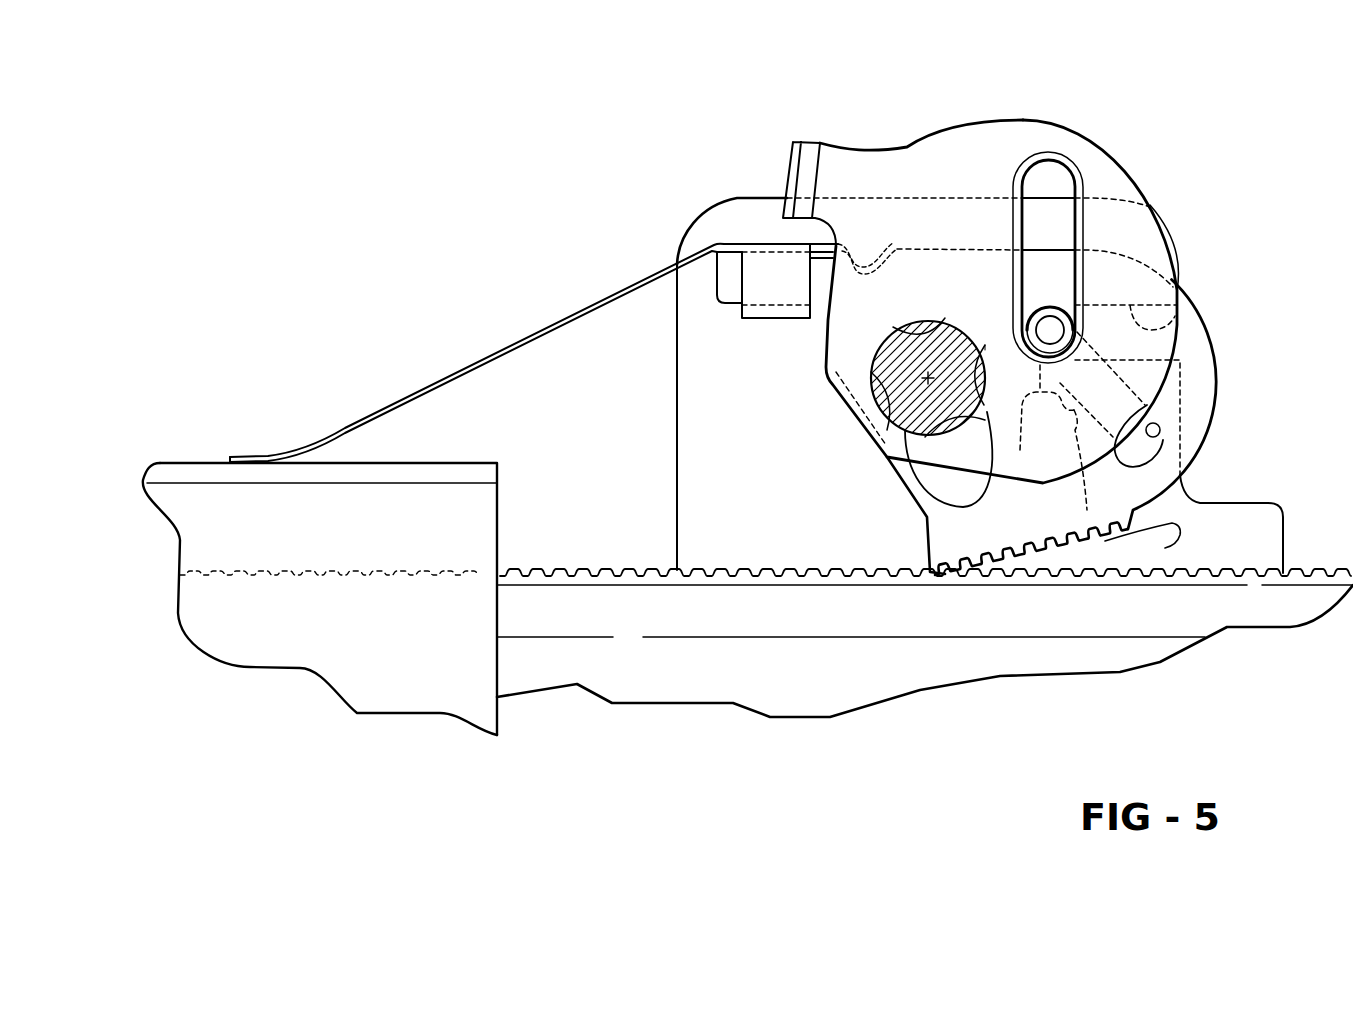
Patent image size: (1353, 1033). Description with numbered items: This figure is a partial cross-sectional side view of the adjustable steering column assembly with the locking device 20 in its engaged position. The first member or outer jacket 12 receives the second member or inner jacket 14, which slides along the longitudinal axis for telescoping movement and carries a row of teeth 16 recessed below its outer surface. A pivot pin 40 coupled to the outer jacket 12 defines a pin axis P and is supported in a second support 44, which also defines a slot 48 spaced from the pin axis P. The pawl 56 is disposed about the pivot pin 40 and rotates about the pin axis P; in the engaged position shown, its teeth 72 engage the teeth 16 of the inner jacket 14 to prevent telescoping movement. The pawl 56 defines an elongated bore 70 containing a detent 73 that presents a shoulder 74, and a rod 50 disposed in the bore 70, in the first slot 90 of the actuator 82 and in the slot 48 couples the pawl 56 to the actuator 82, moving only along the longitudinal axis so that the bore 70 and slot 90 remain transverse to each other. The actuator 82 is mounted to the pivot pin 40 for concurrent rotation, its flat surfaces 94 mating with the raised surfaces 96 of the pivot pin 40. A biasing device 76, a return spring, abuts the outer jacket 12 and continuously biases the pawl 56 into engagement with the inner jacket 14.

The first member (outer jacket) 12 is at (390, 682).
The second member (inner jacket) 14 is at (1293, 608).
The teeth 16 is at (1210, 572).
The locking device 20 is at (1190, 227).
The pivot pin 40 is at (915, 415).
The second support 44 is at (697, 478).
The slot 48 is at (1193, 320).
The rod 50 is at (1050, 333).
The pawl 56 is at (1207, 333).
The elongated bore 70 is at (1160, 437).
The teeth 72 is at (1102, 543).
The detent 73 is at (1039, 418).
The shoulder 74 is at (1093, 428).
The biasing device (return spring) 76 is at (487, 358).
The actuator 82 is at (920, 133).
The first slot 90 is at (1027, 223).
The flat surfaces 94 is at (976, 358).
The raised surfaces 96 is at (907, 440).
The pin axis P is at (930, 370).